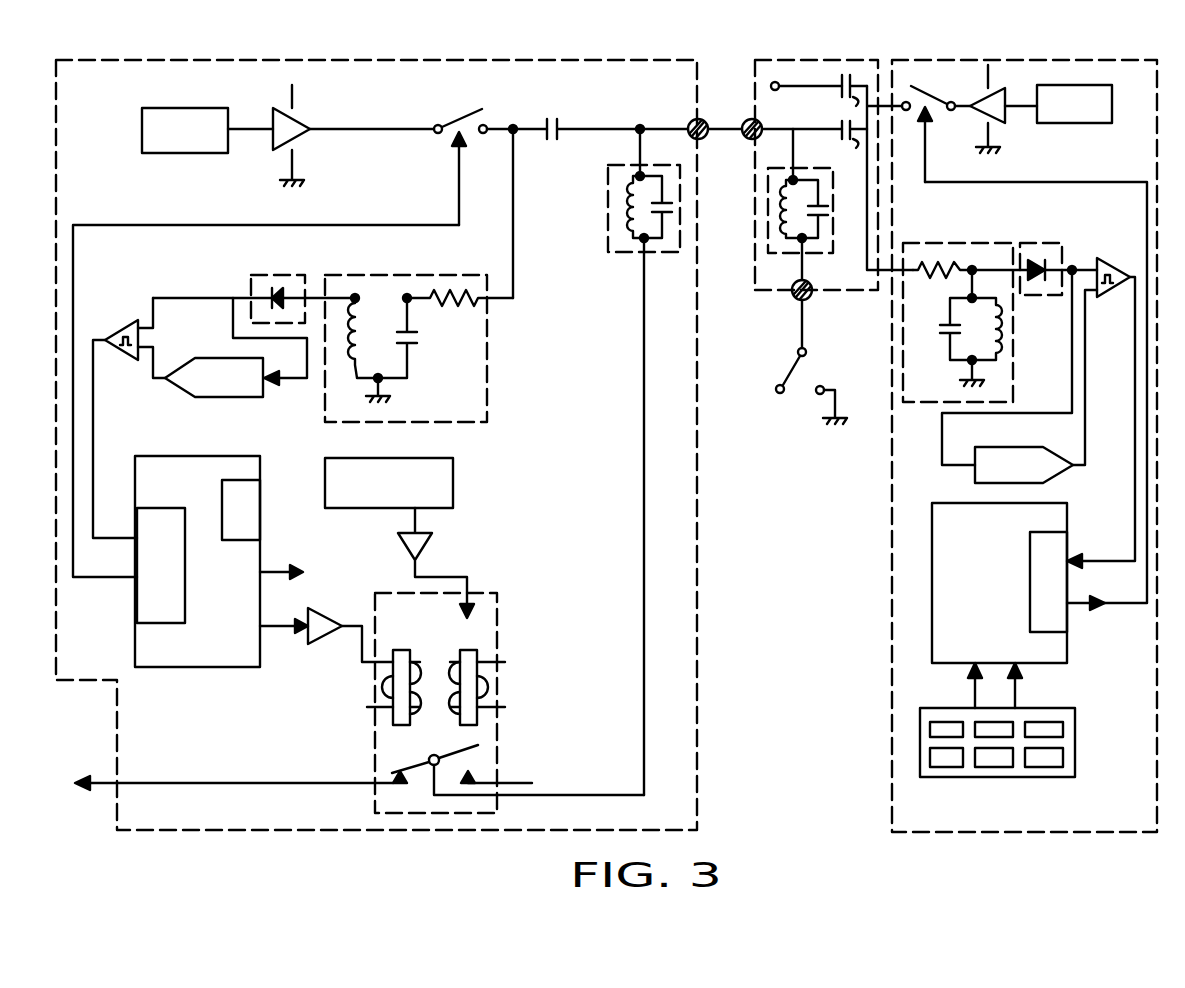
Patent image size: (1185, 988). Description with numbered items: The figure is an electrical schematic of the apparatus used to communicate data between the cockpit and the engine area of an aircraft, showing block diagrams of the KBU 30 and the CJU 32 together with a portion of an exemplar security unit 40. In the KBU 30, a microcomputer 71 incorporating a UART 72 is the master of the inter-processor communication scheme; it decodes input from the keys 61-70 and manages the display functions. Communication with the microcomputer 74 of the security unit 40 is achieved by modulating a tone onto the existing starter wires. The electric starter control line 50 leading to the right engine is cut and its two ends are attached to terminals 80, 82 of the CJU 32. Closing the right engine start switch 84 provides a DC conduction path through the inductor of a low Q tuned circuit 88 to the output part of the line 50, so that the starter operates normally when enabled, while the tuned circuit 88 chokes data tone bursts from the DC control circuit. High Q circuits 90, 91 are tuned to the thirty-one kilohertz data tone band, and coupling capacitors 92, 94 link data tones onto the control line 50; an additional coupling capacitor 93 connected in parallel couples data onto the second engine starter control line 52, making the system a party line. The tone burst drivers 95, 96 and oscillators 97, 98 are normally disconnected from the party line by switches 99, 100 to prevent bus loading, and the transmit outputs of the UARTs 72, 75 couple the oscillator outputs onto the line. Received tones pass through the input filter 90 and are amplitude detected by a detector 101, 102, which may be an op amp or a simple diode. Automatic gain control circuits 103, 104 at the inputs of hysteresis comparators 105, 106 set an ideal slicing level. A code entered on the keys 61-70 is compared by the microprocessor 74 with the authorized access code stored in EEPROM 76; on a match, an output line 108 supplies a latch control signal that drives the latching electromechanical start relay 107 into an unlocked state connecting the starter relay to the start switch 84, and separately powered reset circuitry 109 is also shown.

The KBU 30 is at (1090, 832).
The CJU 32 is at (765, 60).
The security unit 40 is at (262, 60).
The electric starter control line 50 is at (720, 120).
The second engine starter control line 52 is at (768, 90).
The keys 61-70 is at (1092, 765).
The microcomputer 71 is at (1050, 503).
The UART 72 is at (1058, 617).
The microcomputer 74 is at (175, 456).
The UART 75 is at (145, 594).
The EEPROM 76 is at (248, 510).
The terminal 80 is at (810, 300).
The terminal 82 is at (752, 142).
The right engine start switch 84 is at (790, 372).
The tuned circuit 88 is at (772, 236).
The tuned circuit 90 is at (608, 254).
The tuned circuit 91 is at (492, 366).
The coupling capacitor 92 is at (860, 178).
The coupling capacitor 93 is at (837, 99).
The coupling capacitor 94 is at (546, 118).
The tone burst driver 95 is at (980, 64).
The tone burst driver 96 is at (283, 108).
The oscillator 97 is at (1065, 123).
The oscillator 98 is at (205, 108).
The switch 99 is at (1024, 348).
The switch 100 is at (458, 108).
The detector 101 is at (1022, 243).
The detector 102 is at (280, 275).
The automatic gain control circuit 103 is at (1013, 370).
The automatic gain control circuit 104 is at (250, 397).
The hysteresis comparator 105 is at (1135, 228).
The hysteresis comparator 106 is at (118, 325).
The latching electromechanical start relay 107 is at (375, 776).
The output line 108 is at (280, 618).
The reset circuitry 109 is at (450, 458).